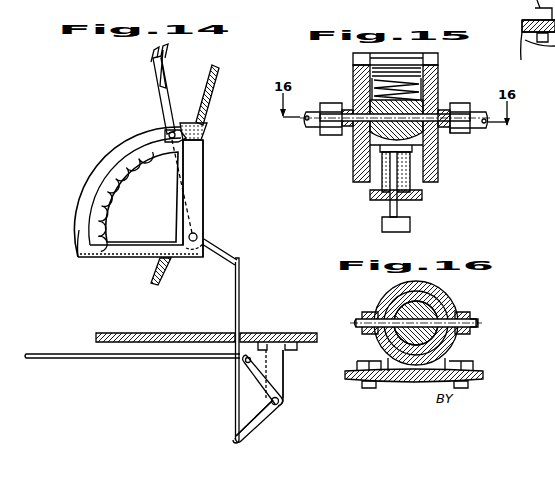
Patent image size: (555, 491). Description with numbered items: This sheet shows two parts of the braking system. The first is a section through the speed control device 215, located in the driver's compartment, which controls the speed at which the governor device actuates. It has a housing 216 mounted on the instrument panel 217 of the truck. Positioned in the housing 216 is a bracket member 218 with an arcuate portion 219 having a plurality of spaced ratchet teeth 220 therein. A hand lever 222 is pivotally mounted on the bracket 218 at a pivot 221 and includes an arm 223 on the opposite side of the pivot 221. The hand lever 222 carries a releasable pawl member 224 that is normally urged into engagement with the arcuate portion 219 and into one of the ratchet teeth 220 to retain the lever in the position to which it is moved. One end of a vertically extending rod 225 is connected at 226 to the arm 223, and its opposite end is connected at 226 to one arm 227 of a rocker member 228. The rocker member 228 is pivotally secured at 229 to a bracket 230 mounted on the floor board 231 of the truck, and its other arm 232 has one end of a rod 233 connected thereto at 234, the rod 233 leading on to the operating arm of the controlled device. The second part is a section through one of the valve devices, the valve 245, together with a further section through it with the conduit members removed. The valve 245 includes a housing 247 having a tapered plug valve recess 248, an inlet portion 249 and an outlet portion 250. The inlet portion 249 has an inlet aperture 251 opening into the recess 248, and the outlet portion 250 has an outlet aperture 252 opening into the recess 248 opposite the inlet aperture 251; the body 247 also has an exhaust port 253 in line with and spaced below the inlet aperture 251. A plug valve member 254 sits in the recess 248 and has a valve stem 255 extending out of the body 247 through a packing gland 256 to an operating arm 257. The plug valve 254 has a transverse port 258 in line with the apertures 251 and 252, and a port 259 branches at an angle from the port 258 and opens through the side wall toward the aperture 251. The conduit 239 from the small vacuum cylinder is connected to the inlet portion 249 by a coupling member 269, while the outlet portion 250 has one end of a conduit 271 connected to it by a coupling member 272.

In FIG. 14, the speed control device 215 is at (112, 150).
In FIG. 14, the housing 216 is at (80, 245).
In FIG. 14, the instrument panel 217 is at (217, 72).
In FIG. 14, the bracket member 218 is at (197, 185).
In FIG. 14, the arcuate portion 219 is at (115, 200).
In FIG. 14, the ratchet teeth 220 is at (102, 215).
In FIG. 14, the pivot 221 is at (198, 234).
In FIG. 14, the hand lever 222 is at (160, 98).
In FIG. 14, the arm 223 is at (222, 256).
In FIG. 14, the releasable pawl member 224 is at (203, 128).
In FIG. 14, the vertically extending rod 225 is at (240, 306).
In FIG. 14, the connection 226 is at (234, 440).
In FIG. 14, the arm 227 is at (254, 426).
In FIG. 14, the rocker member 228 is at (276, 391).
In FIG. 14, the pivot 229 is at (281, 403).
In FIG. 14, the bracket 230 is at (284, 367).
In FIG. 14, the floor board 231 is at (191, 333).
In FIG. 14, the arm 232 is at (255, 381).
In FIG. 14, the rod 233 is at (119, 360).
In FIG. 14, the connection 234 is at (246, 361).
In FIG. 15, the conduit 239 is at (310, 126).
In FIG. 15, the valve 245 is at (440, 70).
In FIG. 16, the valve 245 is at (382, 302).
In FIG. 15, the housing 247 is at (437, 170).
In FIG. 15, the tapered plug valve recess 248 is at (373, 102).
In FIG. 15, the inlet portion 249 is at (345, 127).
In FIG. 16, the inlet portion 249 is at (364, 317).
In FIG. 15, the outlet portion 250 is at (452, 136).
In FIG. 16, the outlet portion 250 is at (478, 321).
In FIG. 15, the inlet aperture 251 is at (356, 134).
In FIG. 16, the inlet aperture 251 is at (366, 331).
In FIG. 15, the outlet aperture 252 is at (440, 110).
In FIG. 16, the outlet aperture 252 is at (462, 318).
In FIG. 16, the exhaust port 253 is at (388, 373).
In FIG. 15, the plug valve member 254 is at (432, 95).
In FIG. 15, the valve stem 255 is at (398, 210).
In FIG. 15, the packing gland 256 is at (370, 197).
In FIG. 15, the operating arm 257 is at (382, 225).
In FIG. 16, the transverse port 258 is at (447, 336).
In FIG. 16, the port 259 is at (440, 301).
In FIG. 15, the coupling member 269 is at (325, 104).
In FIG. 15, the conduit 271 is at (483, 128).
In FIG. 15, the coupling member 272 is at (470, 107).